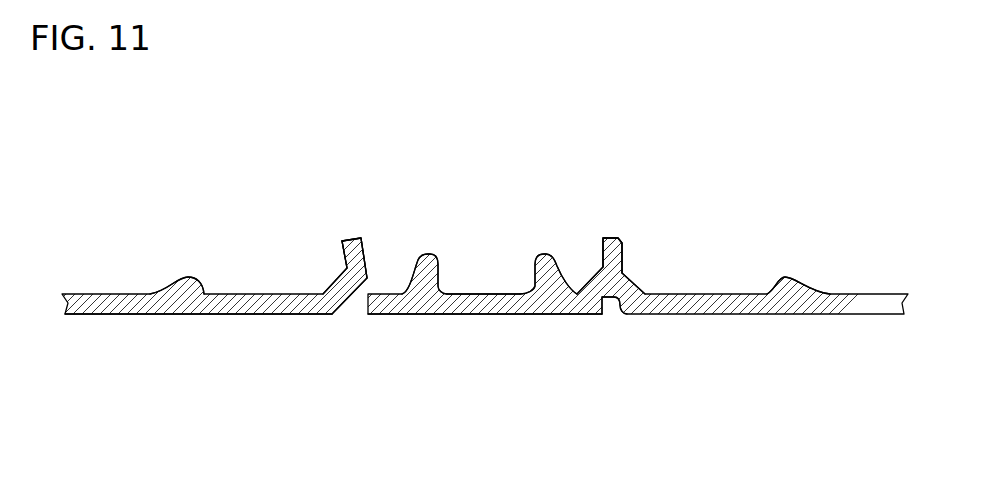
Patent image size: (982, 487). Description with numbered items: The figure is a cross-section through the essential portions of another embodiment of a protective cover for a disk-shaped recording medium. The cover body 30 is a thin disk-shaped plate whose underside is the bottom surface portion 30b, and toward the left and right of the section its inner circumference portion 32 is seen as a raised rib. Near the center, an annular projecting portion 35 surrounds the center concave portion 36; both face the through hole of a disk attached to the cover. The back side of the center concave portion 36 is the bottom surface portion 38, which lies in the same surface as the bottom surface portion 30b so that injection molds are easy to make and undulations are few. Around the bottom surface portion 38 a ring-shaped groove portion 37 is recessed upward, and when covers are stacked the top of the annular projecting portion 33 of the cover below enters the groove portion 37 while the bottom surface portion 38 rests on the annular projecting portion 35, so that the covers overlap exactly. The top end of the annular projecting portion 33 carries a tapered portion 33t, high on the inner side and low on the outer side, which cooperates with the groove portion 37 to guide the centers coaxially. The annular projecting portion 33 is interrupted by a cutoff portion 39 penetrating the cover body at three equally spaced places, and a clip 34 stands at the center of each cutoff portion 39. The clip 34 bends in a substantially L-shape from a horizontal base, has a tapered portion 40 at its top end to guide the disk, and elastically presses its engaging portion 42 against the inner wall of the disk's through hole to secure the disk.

The cover body 30 is at (172, 312).
The bottom surface portion of the cover body 30b is at (250, 314).
The inner circumference portion 32 is at (191, 277).
The annular projecting portion 33 is at (622, 250).
The tapered portion 33t is at (620, 238).
The clip 34 is at (358, 240).
The annular projecting portion 35 is at (430, 253).
The center concave portion 36 is at (500, 294).
The groove portion 37 is at (622, 315).
The bottom surface portion 38 is at (467, 314).
The cutoff portion 39 is at (358, 310).
The tapered portion 40 is at (343, 240).
The engaging portion 42 is at (340, 262).